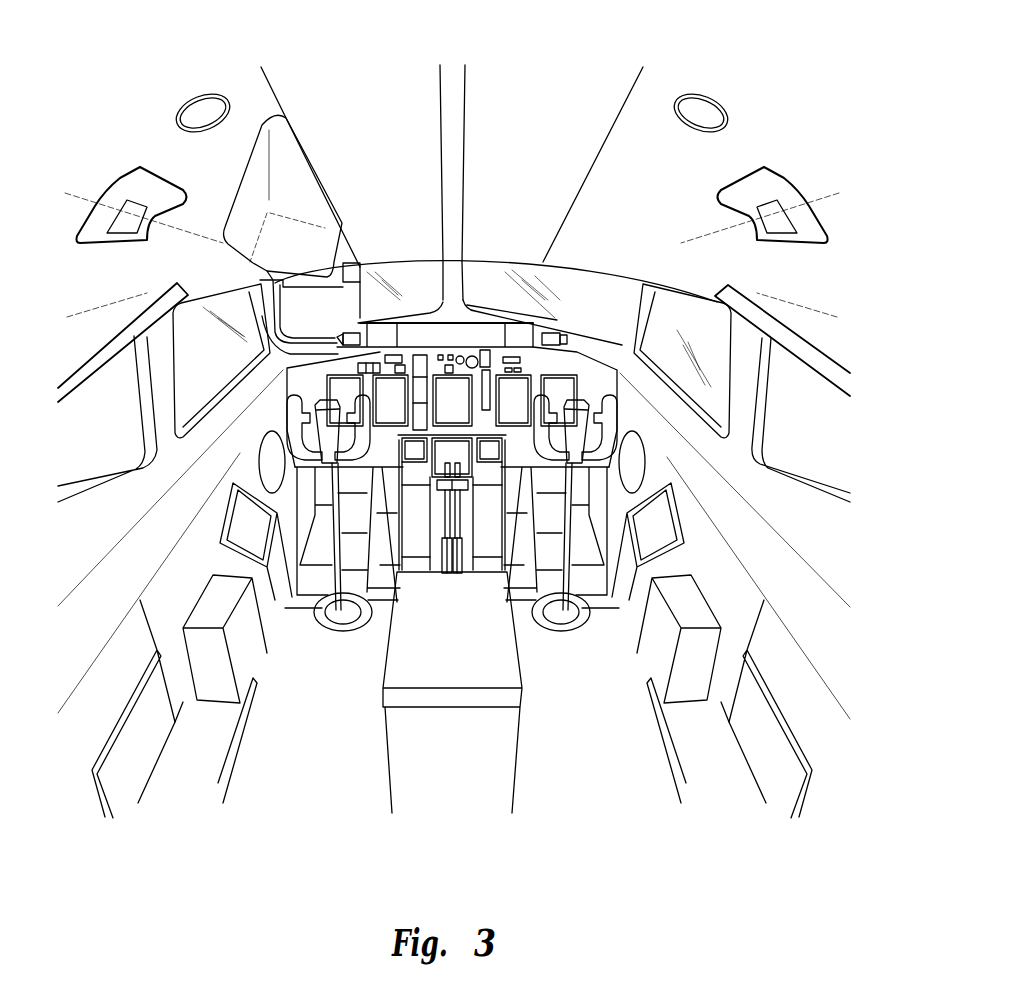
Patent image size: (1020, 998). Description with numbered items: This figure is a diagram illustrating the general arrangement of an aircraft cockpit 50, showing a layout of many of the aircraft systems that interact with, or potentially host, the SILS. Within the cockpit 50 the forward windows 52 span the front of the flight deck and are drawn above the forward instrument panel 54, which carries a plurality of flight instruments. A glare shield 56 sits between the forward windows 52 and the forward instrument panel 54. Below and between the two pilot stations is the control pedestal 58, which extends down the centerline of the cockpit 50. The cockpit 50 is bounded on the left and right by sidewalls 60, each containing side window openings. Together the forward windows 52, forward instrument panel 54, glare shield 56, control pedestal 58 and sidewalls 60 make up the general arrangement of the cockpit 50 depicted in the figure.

The aircraft cockpit 50 is at (548, 72).
The forward windows 52 is at (483, 288).
The forward instrument panel 54 is at (624, 341).
The glare shield 56 is at (412, 327).
The control pedestal 58 is at (510, 455).
The sidewalls 60 is at (717, 490).